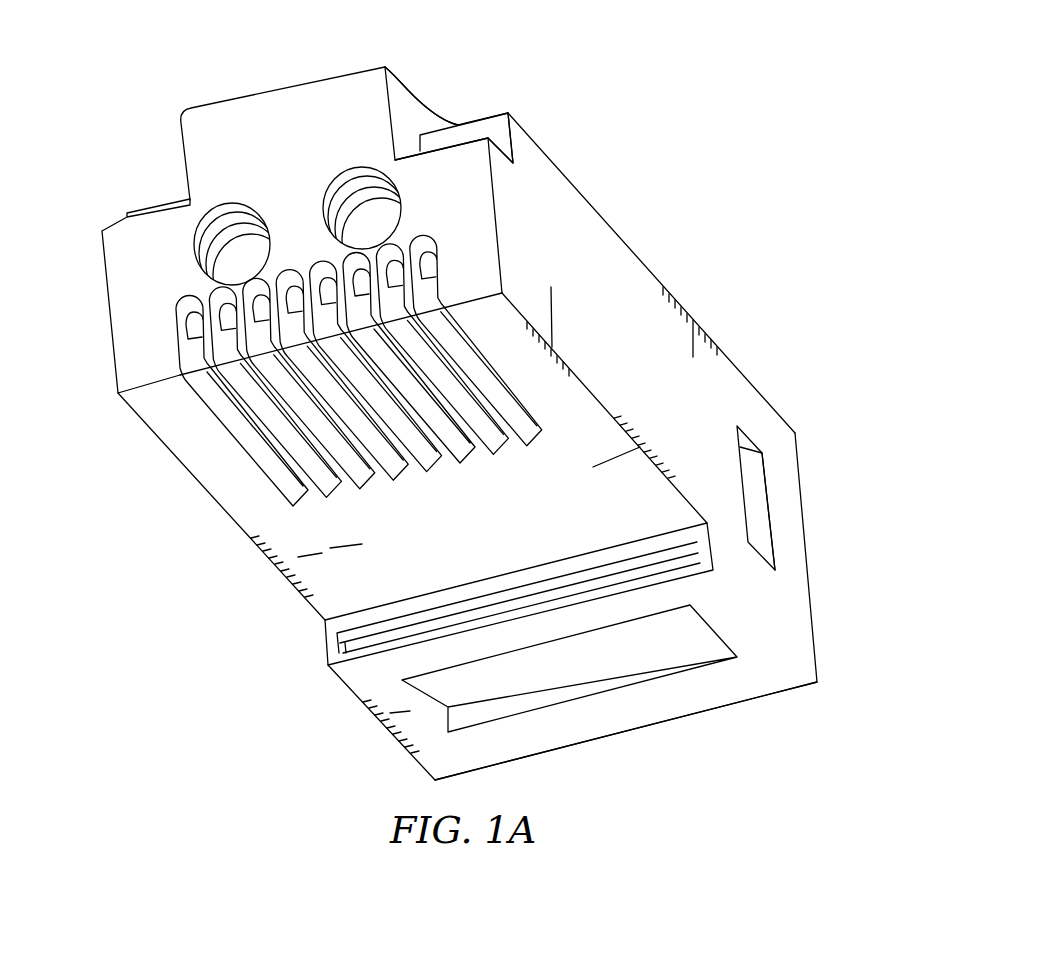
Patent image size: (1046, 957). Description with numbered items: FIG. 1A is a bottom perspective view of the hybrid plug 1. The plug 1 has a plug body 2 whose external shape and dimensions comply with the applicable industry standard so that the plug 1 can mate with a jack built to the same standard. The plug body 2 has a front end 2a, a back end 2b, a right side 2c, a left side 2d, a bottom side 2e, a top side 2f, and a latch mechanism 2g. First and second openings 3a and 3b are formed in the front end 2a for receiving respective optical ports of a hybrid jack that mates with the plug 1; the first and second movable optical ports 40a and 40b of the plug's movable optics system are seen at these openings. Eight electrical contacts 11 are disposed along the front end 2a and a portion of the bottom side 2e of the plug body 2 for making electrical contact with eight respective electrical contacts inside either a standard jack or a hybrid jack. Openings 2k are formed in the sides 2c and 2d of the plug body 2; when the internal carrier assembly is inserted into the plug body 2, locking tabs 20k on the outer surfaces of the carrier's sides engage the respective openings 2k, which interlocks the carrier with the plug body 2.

The hybrid RJ-45 plug 1 is at (571, 75).
The plug body 2 is at (702, 328).
The front end 2a is at (140, 367).
The back end 2b is at (820, 660).
The right side 2c is at (604, 254).
The left side 2d is at (188, 473).
The bottom side 2e is at (580, 413).
The top side 2f is at (563, 170).
The latch mechanism 2g is at (417, 91).
The openings 2k is at (753, 436).
The locking tabs 20k is at (758, 507).
The first opening 3a is at (398, 226).
The second opening 3b is at (200, 268).
The electrical contacts 11 is at (377, 380).
The first movable optical port 40a is at (368, 184).
The second movable optical port 40b is at (218, 232).